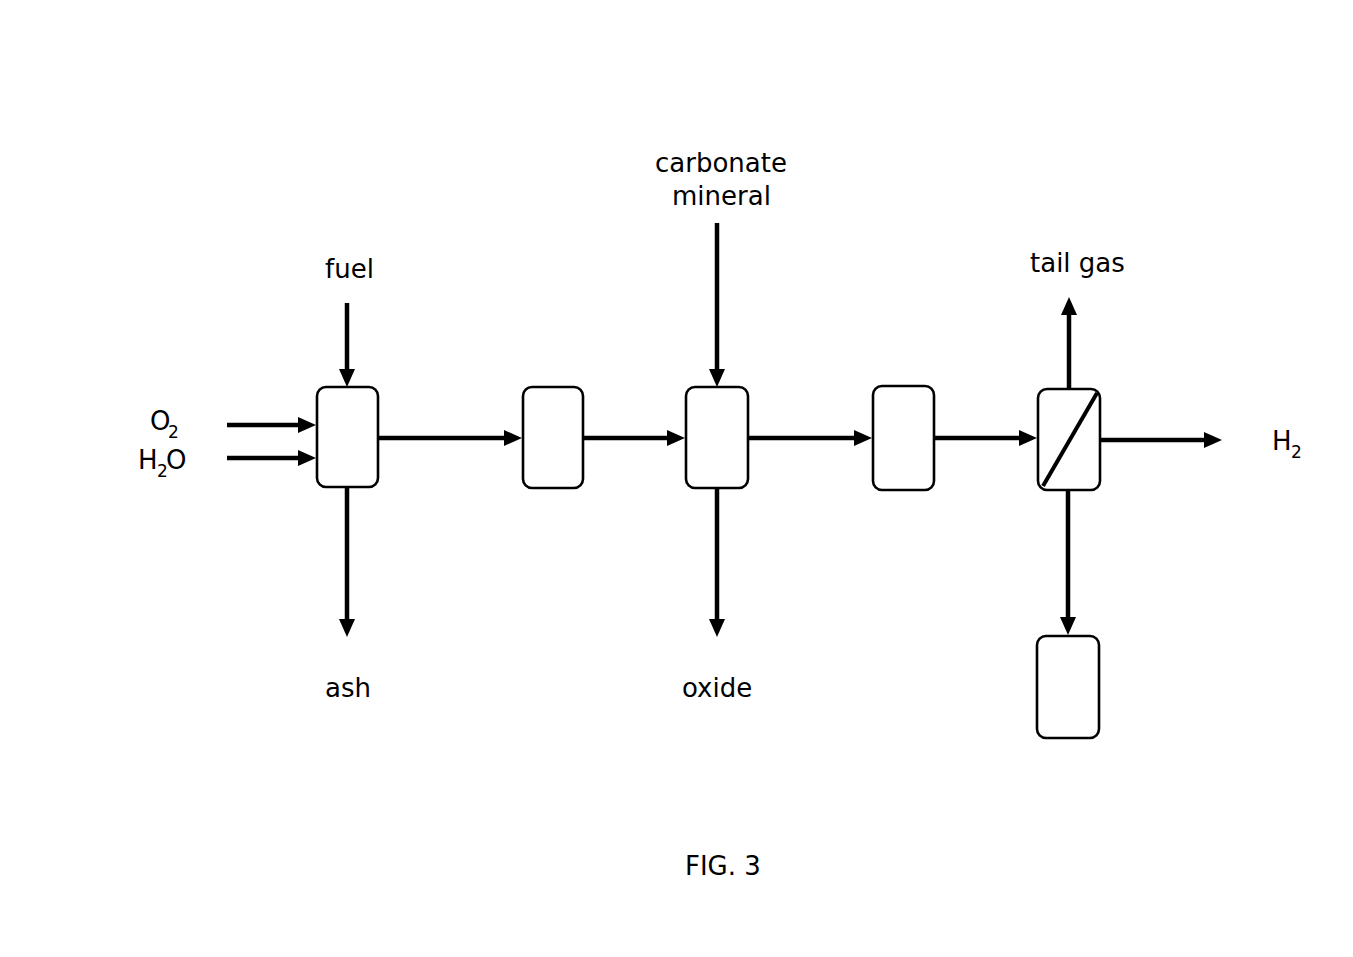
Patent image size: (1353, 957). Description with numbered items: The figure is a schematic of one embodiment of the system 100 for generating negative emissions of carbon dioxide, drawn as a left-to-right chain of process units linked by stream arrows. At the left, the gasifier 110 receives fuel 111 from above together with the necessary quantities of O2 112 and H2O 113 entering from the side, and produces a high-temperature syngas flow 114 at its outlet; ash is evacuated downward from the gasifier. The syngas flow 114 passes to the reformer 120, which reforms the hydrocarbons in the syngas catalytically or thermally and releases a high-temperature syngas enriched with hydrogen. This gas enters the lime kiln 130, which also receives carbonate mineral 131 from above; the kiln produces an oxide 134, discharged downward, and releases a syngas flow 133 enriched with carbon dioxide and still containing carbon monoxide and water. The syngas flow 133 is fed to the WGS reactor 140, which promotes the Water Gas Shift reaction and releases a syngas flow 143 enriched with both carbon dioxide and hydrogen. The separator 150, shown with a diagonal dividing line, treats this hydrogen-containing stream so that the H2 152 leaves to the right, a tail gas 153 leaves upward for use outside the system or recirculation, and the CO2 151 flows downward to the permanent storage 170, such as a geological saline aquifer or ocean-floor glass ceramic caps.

The system 100 is at (350, 147).
The gasifier 110 is at (345, 428).
The fuel 111 is at (355, 335).
The O2 112 is at (248, 420).
The H2O 113 is at (248, 462).
The high-temperature syngas flow 114 is at (455, 440).
The reformer 120 is at (555, 423).
The lime kiln 130 is at (717, 427).
The carbonate mineral 131 is at (720, 319).
The syngas flow enriched with CO2 133 is at (798, 440).
The oxide 134 is at (723, 596).
The WGS reactor 140 is at (900, 427).
The syngas flow enriched with CO2 and H2 143 is at (970, 440).
The separator 150 is at (1088, 484).
The CO2 151 is at (1072, 572).
The H2 152 is at (1160, 440).
The tail gas 153 is at (1072, 364).
The permanent storage 170 is at (1085, 712).